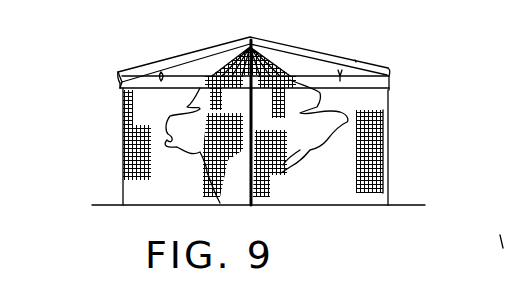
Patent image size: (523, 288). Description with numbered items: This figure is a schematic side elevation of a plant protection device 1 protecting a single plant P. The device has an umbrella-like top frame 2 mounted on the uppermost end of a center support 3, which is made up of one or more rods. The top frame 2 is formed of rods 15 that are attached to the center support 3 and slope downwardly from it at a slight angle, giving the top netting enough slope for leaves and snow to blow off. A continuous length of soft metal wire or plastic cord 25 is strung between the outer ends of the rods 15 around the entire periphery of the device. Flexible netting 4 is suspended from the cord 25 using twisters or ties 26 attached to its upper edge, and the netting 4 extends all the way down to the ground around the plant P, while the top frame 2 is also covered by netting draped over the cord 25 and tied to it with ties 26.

The plant protection device 1 is at (141, 54).
The top frame 2 is at (262, 33).
The center support 3 is at (241, 112).
The flexible netting 4 is at (377, 148).
The rods 15 is at (190, 55).
The cord 25 is at (310, 77).
The ties 26 is at (127, 83).
The plant P is at (178, 146).